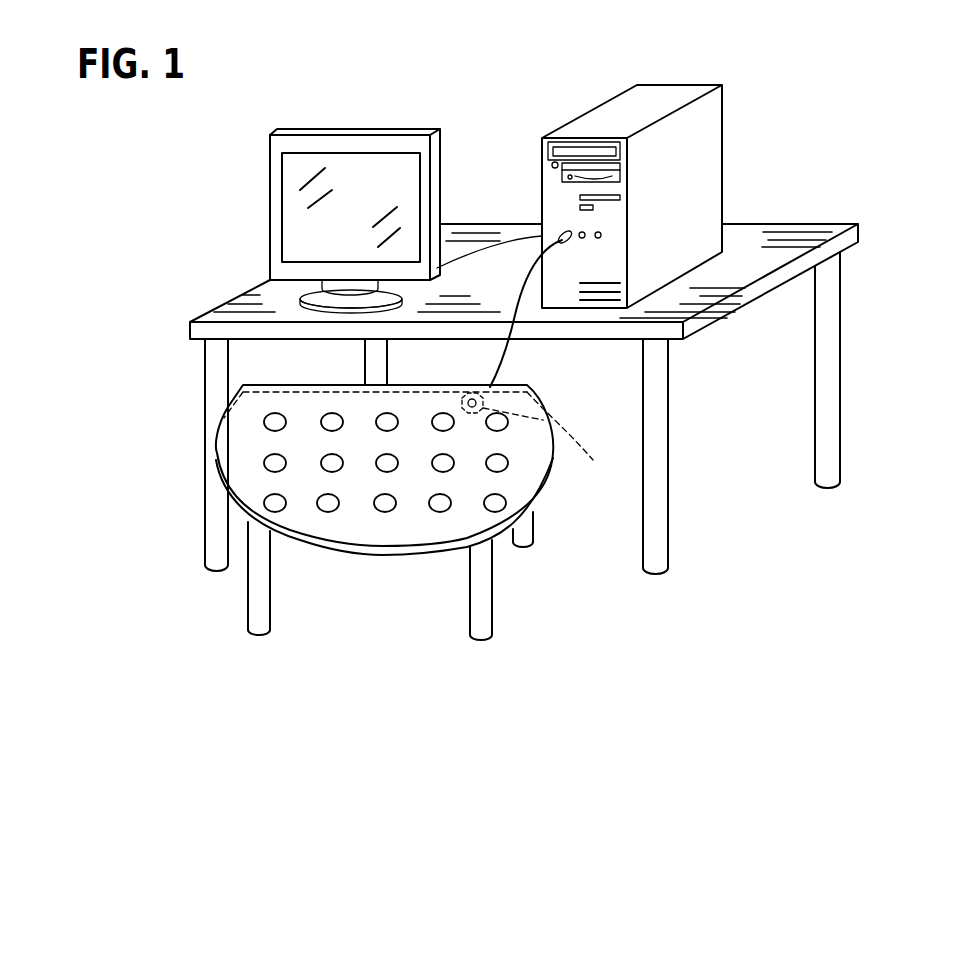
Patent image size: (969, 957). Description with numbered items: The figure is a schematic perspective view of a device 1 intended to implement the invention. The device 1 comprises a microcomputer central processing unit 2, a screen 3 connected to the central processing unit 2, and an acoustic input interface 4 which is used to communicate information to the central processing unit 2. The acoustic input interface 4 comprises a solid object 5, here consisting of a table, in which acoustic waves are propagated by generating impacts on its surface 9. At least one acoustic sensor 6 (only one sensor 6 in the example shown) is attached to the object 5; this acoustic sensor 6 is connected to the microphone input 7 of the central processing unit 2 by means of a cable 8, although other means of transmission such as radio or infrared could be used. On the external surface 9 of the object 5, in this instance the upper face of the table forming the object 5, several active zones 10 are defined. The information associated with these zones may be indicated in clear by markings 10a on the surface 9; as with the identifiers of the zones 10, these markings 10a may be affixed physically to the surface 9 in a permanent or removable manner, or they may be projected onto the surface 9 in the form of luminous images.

The device 1 is at (156, 314).
The microcomputer central processing unit 2 is at (747, 138).
The screen 3 is at (400, 143).
The acoustic input interface 4 is at (362, 581).
The solid object 5 is at (551, 507).
The acoustic sensor 6 is at (569, 445).
The microphone input 7 is at (570, 236).
The cable 8 is at (507, 363).
The surface 9 is at (400, 523).
The active zones 10 is at (277, 462).
The markings 10a is at (275, 481).